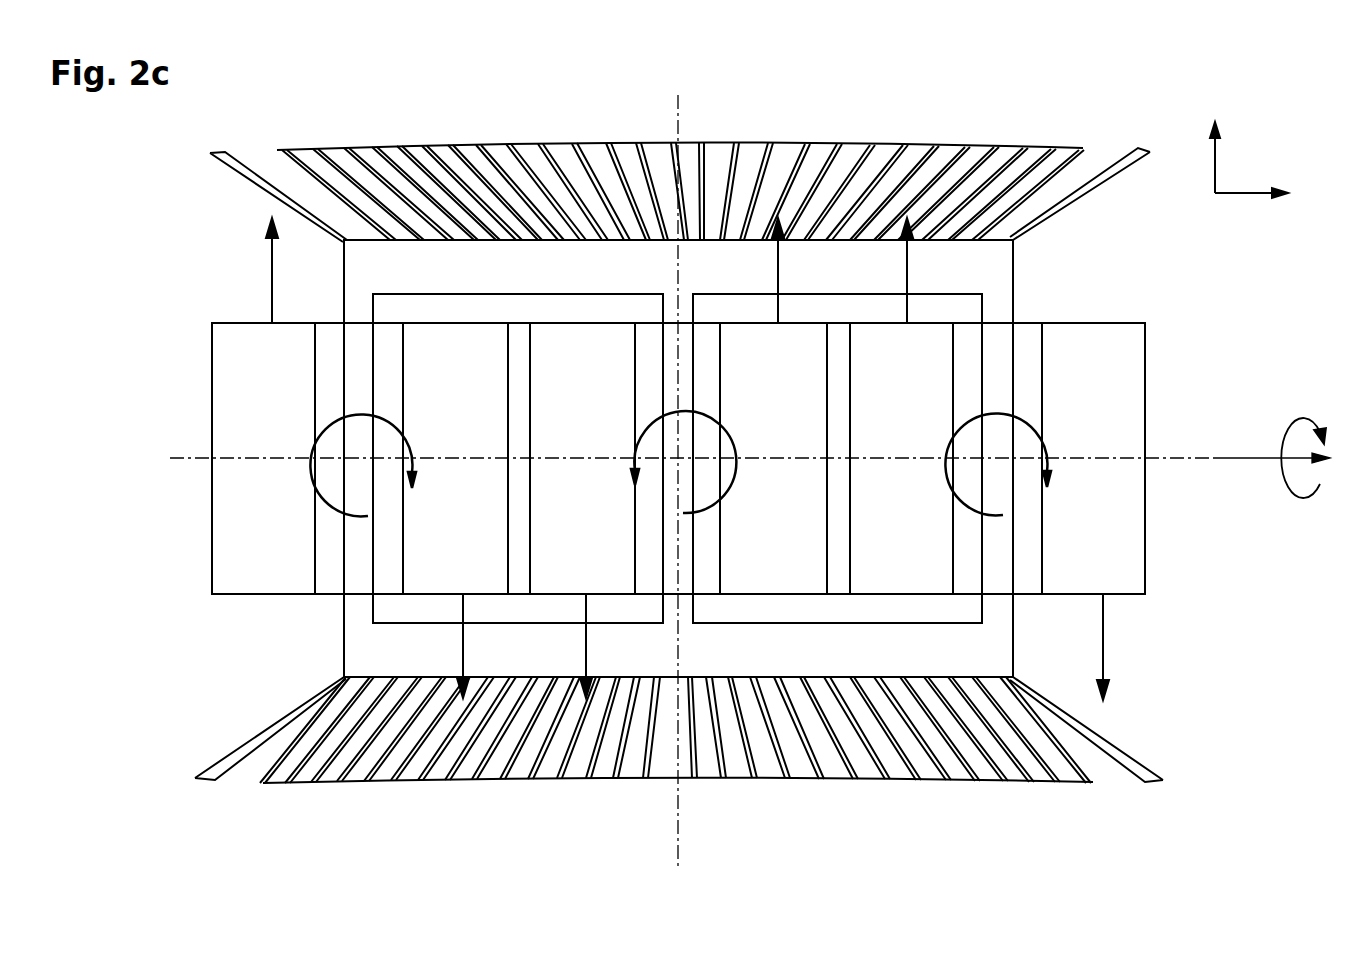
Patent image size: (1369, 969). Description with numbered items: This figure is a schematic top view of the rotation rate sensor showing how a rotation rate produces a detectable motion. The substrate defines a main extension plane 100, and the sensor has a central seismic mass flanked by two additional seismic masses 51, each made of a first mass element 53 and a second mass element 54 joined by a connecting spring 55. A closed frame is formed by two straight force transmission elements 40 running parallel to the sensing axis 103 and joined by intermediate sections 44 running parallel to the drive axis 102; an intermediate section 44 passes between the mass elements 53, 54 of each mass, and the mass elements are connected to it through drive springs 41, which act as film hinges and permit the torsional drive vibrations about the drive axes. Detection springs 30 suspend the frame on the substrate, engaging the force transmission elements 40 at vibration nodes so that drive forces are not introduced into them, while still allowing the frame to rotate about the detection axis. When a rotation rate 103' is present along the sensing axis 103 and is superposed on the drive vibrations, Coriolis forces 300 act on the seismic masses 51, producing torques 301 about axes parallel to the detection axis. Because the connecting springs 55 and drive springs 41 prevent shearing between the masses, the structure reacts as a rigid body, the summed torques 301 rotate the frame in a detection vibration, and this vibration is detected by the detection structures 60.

The detection spring 30 is at (258, 182).
The force transmission element 40 is at (830, 655).
The drive spring 41 is at (707, 345).
The intermediate section 44 is at (995, 350).
The additional seismic mass 51 is at (1130, 363).
The first mass element 53 is at (558, 347).
The second mass element 54 is at (750, 343).
The connecting spring 55 is at (517, 357).
The detection structure 60 is at (575, 187).
The main extension plane 100 is at (1270, 174).
The drive axis 102 is at (683, 826).
The sensing axis 103 is at (750, 505).
The rotation rate 103' is at (1320, 419).
The Coriolis force 300 is at (782, 273).
The torque 301 is at (323, 422).